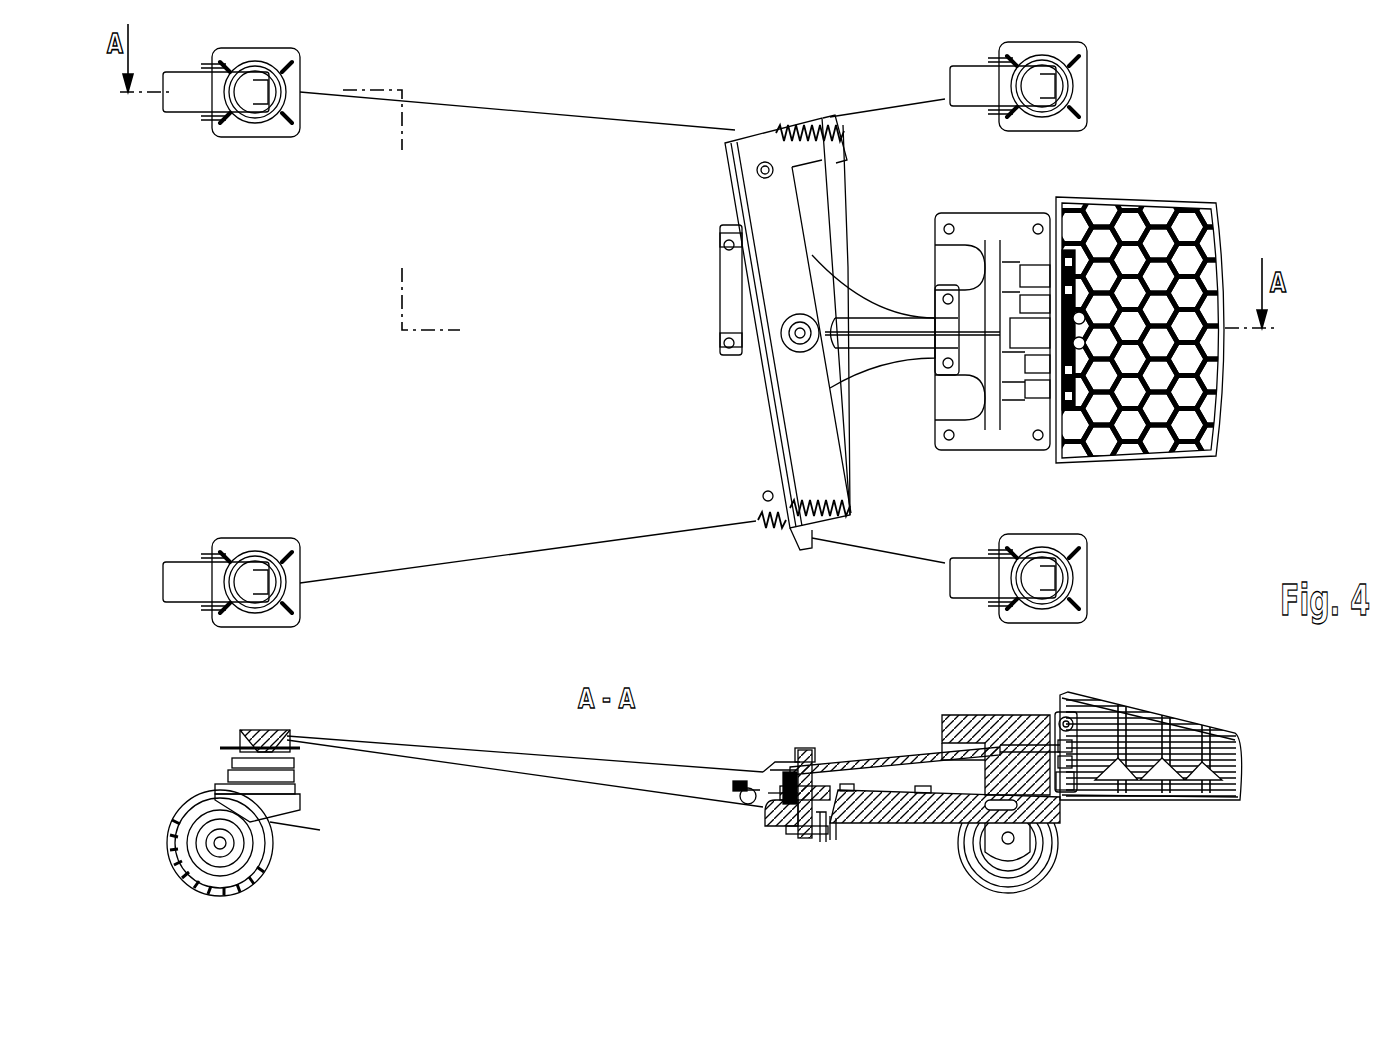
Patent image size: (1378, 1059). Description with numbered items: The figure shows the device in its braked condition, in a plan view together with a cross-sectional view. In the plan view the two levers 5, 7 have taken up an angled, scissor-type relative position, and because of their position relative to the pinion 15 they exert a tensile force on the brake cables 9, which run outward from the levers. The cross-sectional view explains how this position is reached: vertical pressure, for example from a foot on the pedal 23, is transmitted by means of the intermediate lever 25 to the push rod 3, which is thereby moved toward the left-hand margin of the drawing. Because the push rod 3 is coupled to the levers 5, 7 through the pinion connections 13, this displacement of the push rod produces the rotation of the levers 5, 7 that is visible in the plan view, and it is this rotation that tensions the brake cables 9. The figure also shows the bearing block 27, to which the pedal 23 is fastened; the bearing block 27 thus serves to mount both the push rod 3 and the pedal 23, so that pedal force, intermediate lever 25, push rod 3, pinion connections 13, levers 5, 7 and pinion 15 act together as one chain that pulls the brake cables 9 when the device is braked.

The push rod 3 is at (920, 820).
The lever 5 is at (760, 206).
The lever 7 is at (820, 232).
The brake cables 9 is at (565, 125).
The pinion connections 13 is at (764, 162).
The pinion 15 is at (795, 343).
The pedal 23 is at (1078, 735).
The intermediate lever 25 is at (1080, 760).
The bearing block 27 is at (1003, 238).